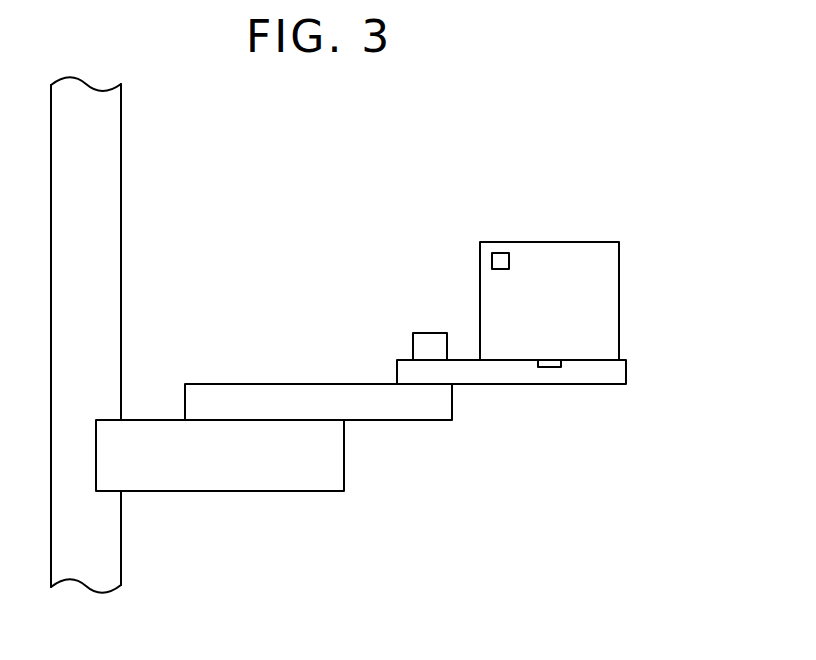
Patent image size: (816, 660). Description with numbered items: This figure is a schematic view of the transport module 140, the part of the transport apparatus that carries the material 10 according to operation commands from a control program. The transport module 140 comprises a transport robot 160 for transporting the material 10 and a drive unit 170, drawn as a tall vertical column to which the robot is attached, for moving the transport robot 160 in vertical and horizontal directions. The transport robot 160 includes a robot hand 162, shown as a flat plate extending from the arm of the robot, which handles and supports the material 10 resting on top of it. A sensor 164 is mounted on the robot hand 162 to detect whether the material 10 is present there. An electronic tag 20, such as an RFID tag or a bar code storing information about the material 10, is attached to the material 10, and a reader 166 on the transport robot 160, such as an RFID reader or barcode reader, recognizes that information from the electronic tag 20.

The material 10 is at (608, 300).
The electronic tag 20 is at (498, 258).
The transport module 140 is at (383, 148).
The transport robot 160 is at (335, 460).
The robot hand 162 is at (617, 373).
The sensor 164 is at (548, 367).
The reader 166 is at (418, 343).
The drive unit 170 is at (108, 199).